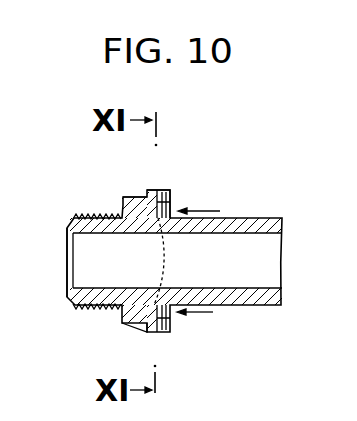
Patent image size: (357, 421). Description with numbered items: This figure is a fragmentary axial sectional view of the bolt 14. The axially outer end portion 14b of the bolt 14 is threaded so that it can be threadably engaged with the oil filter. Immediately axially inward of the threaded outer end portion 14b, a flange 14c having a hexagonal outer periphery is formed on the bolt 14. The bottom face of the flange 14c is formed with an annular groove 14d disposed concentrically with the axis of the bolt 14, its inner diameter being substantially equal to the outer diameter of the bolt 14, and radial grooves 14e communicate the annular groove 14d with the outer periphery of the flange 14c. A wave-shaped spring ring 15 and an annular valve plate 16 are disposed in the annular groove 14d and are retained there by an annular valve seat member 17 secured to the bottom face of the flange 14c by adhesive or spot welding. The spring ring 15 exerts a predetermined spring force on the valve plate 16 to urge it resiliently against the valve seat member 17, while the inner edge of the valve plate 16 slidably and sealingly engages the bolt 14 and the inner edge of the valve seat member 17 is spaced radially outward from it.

The bolt 14 is at (260, 218).
The axially outer end portion 14b is at (73, 213).
The flange 14c is at (131, 196).
The annular groove 14d is at (164, 196).
The radial grooves 14e is at (172, 192).
The wave-shaped spring ring 15 is at (172, 258).
The annular valve plate 16 is at (150, 324).
The annular valve seat member 17 is at (170, 327).